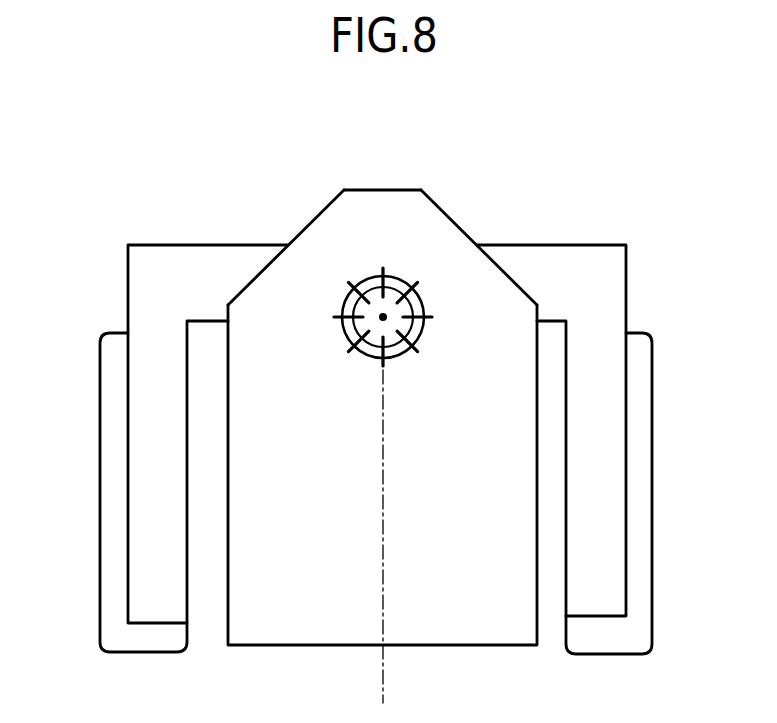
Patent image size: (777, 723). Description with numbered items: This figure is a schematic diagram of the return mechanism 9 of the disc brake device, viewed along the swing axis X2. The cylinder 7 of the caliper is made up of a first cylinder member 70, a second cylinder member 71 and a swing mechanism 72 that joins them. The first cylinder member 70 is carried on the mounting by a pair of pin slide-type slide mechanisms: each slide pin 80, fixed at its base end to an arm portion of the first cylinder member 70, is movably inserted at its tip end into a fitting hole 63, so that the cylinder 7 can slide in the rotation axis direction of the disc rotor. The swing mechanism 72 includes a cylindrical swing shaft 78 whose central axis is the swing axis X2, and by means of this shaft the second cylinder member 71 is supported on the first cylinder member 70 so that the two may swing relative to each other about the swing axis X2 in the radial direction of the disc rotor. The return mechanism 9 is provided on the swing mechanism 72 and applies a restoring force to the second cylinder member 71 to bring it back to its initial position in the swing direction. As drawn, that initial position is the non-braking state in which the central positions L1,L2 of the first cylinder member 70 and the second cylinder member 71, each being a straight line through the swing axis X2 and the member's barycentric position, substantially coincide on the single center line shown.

The cylinder 7 is at (460, 143).
The first cylinder member 70 is at (255, 258).
The second cylinder member 71 is at (358, 208).
The swing mechanism 72 is at (411, 251).
The return mechanism 9 is at (463, 271).
The swing shaft 78 is at (406, 328).
The swing axis X2 is at (387, 315).
The slide pin 80 is at (141, 442).
The fitting hole 63 is at (100, 490).
The central positions of the first and second cylinder members L1,L2 is at (388, 680).